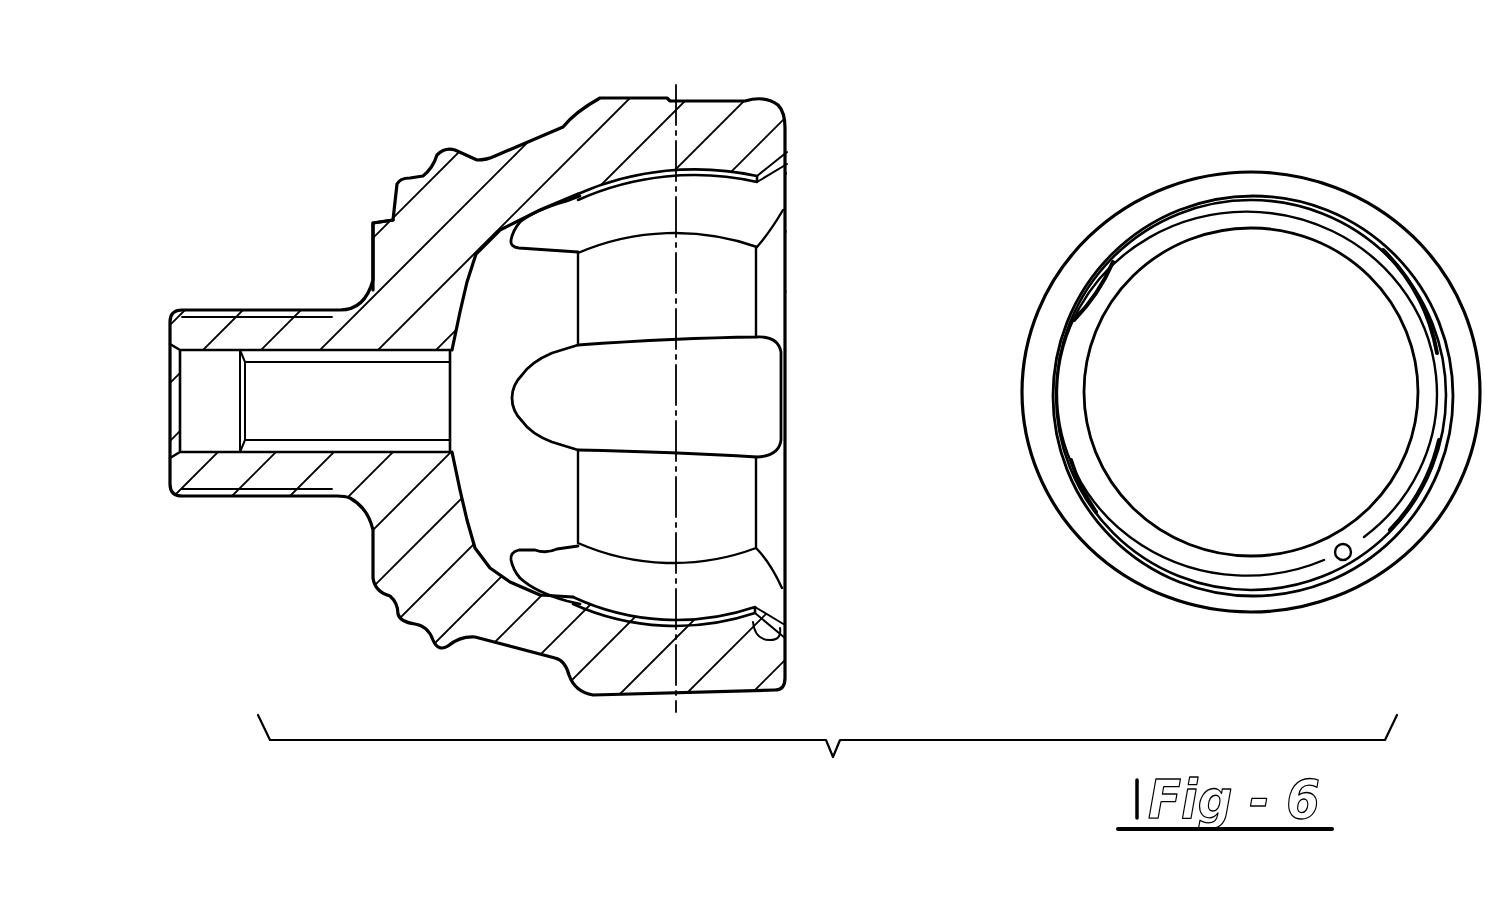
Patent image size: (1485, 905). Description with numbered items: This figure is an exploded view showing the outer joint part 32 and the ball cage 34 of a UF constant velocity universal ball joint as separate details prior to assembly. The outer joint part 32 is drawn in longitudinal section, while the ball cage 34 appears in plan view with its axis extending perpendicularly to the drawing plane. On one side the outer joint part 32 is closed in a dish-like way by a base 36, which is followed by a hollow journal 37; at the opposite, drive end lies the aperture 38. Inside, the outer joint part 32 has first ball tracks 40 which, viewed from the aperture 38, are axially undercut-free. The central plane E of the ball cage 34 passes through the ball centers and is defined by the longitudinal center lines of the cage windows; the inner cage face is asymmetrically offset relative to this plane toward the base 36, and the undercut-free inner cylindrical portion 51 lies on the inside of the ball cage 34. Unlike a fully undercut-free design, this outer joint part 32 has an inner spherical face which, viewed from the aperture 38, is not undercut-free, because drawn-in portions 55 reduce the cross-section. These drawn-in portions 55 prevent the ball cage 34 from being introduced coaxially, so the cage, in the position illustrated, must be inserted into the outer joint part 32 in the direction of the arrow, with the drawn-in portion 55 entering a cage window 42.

The outer joint part 32 is at (497, 166).
The ball cage 34 is at (1292, 188).
The base 36 is at (392, 243).
The hollow journal 37 is at (264, 327).
The aperture 38 is at (810, 232).
The first ball tracks 40 is at (713, 193).
The cage window 42 is at (1243, 207).
The undercut-free inner cylindrical portion 51 is at (1355, 558).
The drawn-in portions 55 is at (783, 622).
The central plane E is at (677, 530).